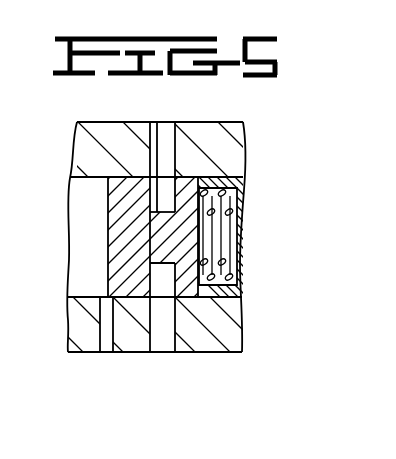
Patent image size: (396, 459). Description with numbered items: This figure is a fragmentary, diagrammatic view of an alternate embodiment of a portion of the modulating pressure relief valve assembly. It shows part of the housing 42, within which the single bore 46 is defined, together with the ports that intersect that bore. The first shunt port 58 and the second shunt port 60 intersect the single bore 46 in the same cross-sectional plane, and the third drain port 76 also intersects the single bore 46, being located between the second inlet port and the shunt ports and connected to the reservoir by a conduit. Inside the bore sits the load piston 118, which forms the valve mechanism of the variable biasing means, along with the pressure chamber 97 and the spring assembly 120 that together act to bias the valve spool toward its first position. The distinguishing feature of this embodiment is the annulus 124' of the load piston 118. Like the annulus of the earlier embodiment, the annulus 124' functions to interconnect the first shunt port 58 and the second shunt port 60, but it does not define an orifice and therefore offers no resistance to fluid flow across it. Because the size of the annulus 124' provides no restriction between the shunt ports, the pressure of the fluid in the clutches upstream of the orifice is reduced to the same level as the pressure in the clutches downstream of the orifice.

The housing 42 is at (224, 137).
The first shunt port 58 is at (169, 142).
The annulus 124' is at (232, 181).
The load piston 118 is at (117, 184).
The pressure chamber 97 is at (100, 232).
The spring assembly 120 is at (240, 225).
The single bore 46 is at (84, 297).
The third drain port 76 is at (110, 333).
The second shunt port 60 is at (172, 340).